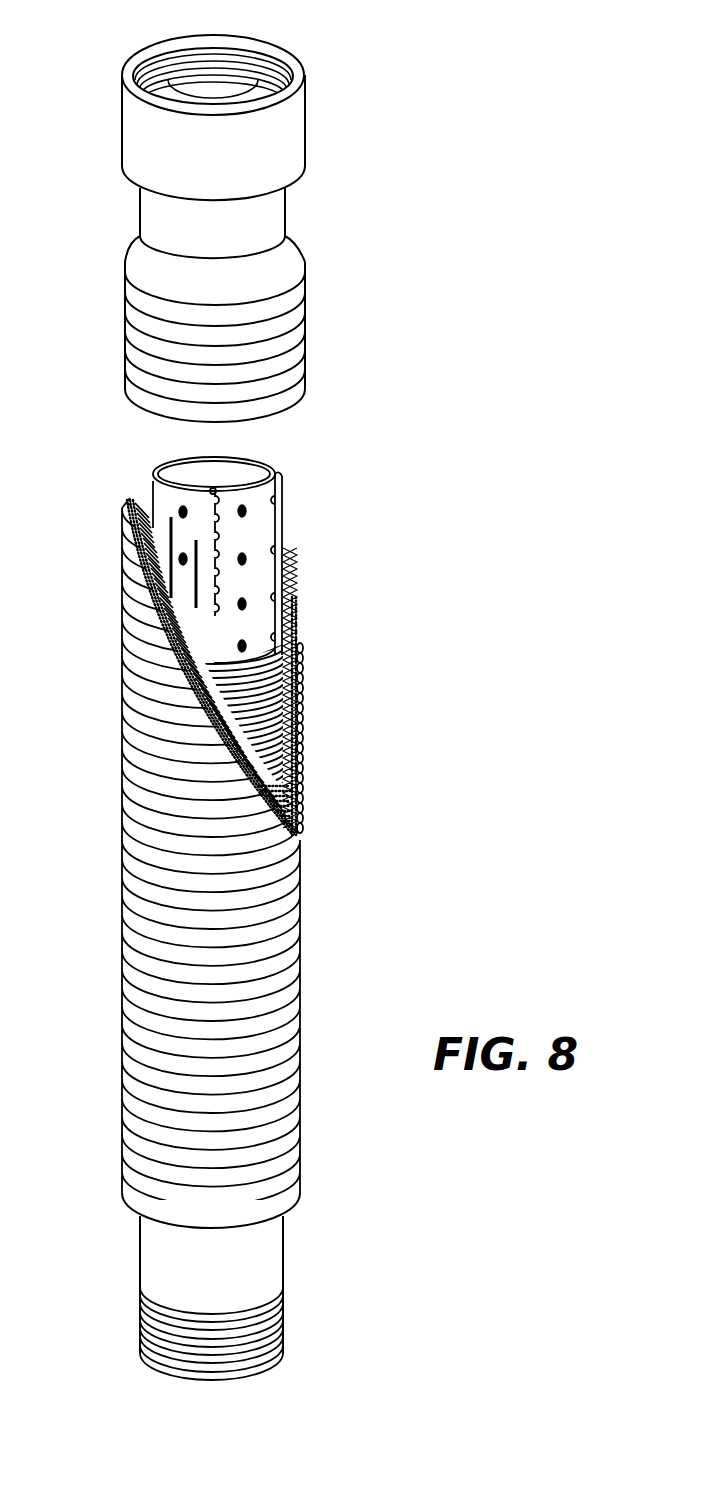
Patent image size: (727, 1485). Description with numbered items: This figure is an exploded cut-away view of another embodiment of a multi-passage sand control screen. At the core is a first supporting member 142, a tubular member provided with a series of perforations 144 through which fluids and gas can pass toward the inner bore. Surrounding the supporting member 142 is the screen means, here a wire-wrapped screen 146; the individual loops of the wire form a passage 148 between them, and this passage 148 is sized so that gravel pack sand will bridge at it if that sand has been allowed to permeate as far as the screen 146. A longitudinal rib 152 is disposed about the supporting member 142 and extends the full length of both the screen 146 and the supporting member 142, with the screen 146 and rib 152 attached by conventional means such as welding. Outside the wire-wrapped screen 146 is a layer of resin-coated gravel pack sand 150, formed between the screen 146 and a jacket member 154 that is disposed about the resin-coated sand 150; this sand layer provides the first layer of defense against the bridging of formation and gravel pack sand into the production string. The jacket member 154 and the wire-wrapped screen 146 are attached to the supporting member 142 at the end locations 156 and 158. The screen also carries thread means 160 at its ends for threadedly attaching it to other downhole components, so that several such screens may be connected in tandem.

The first supporting member 142 is at (182, 484).
The perforations 144 is at (243, 506).
The wire-wrapped screen 146 is at (285, 573).
The passage 148 is at (302, 740).
The resin-coated gravel pack sand 150 is at (295, 615).
The longitudinal rib 152 is at (283, 513).
The jacket member 154 is at (303, 695).
The attachment location 156 is at (283, 236).
The attachment location 158 is at (285, 1207).
The thread means 160 is at (247, 67).